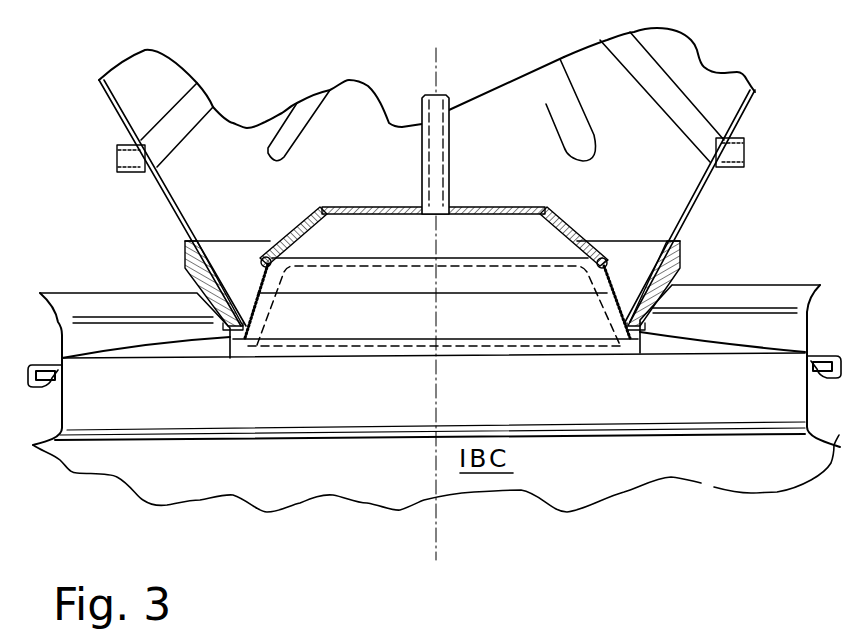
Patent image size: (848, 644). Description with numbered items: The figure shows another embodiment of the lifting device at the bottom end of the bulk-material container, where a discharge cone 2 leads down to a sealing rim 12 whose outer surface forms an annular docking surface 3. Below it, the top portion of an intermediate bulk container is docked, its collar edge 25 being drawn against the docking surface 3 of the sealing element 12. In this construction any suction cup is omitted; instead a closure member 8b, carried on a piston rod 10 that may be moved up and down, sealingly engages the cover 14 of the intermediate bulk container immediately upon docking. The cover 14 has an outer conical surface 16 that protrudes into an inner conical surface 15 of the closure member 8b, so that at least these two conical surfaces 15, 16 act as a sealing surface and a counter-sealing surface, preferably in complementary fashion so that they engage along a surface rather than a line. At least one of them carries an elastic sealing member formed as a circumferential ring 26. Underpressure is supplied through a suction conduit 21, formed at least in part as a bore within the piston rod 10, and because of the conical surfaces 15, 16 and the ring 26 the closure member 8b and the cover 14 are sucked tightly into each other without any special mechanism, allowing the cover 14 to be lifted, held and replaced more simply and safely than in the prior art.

The discharge cone 2 is at (170, 208).
The docking surface 3 is at (684, 270).
The closure member 8b is at (322, 205).
The piston rod 10 is at (458, 139).
The sealing rim 12 is at (185, 267).
The cover 14 is at (373, 325).
The inner conical surface 15 is at (553, 235).
The outer conical surface 16 is at (596, 278).
The suction conduit 21 is at (428, 155).
The collar edge 25 is at (667, 302).
The circumferential ring 26 is at (266, 255).